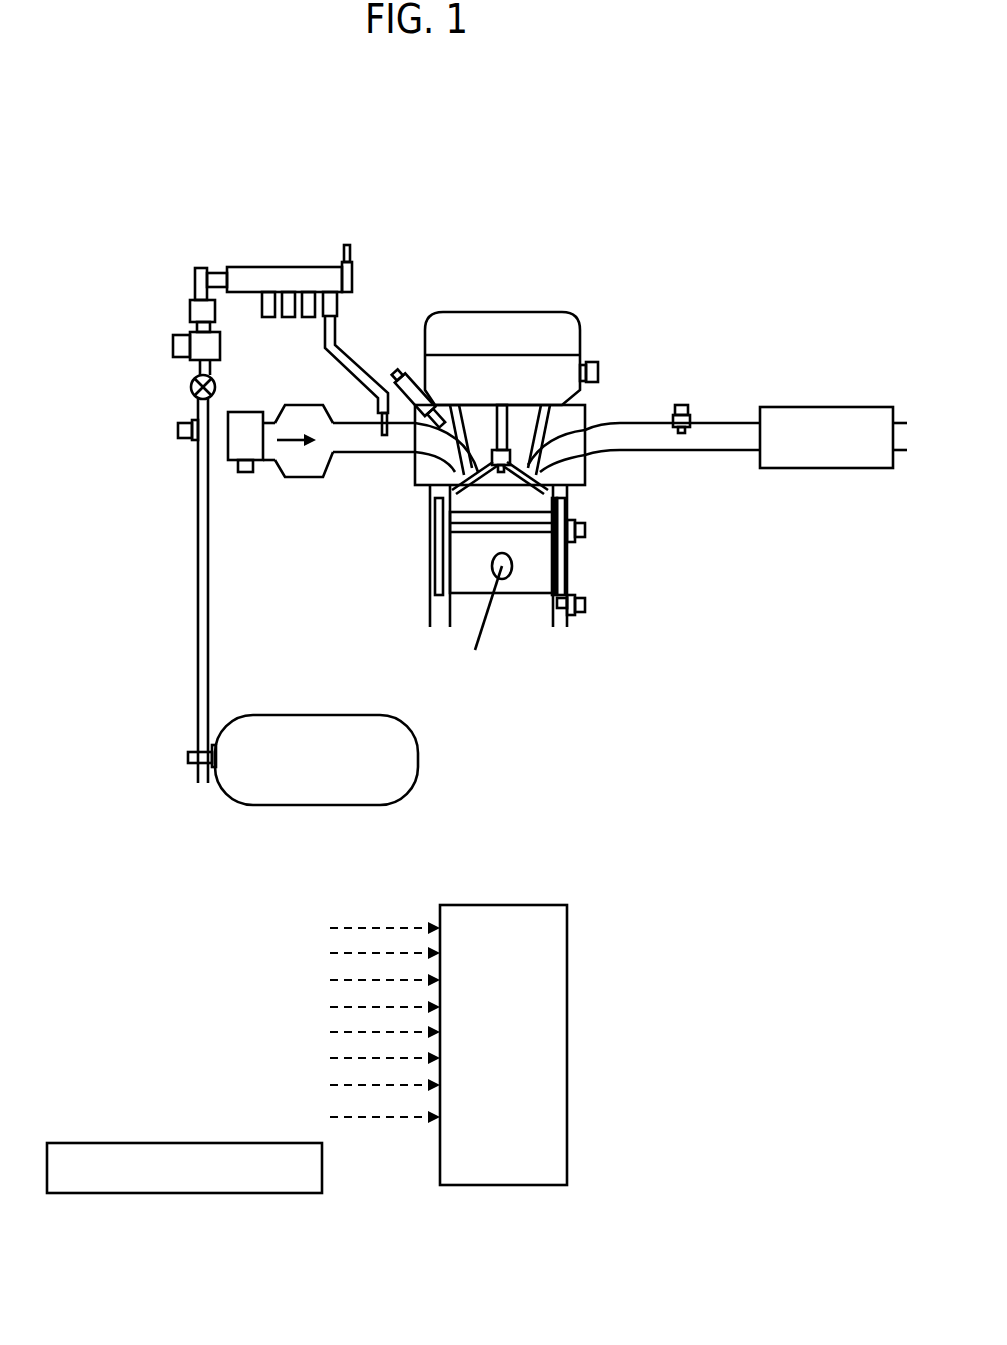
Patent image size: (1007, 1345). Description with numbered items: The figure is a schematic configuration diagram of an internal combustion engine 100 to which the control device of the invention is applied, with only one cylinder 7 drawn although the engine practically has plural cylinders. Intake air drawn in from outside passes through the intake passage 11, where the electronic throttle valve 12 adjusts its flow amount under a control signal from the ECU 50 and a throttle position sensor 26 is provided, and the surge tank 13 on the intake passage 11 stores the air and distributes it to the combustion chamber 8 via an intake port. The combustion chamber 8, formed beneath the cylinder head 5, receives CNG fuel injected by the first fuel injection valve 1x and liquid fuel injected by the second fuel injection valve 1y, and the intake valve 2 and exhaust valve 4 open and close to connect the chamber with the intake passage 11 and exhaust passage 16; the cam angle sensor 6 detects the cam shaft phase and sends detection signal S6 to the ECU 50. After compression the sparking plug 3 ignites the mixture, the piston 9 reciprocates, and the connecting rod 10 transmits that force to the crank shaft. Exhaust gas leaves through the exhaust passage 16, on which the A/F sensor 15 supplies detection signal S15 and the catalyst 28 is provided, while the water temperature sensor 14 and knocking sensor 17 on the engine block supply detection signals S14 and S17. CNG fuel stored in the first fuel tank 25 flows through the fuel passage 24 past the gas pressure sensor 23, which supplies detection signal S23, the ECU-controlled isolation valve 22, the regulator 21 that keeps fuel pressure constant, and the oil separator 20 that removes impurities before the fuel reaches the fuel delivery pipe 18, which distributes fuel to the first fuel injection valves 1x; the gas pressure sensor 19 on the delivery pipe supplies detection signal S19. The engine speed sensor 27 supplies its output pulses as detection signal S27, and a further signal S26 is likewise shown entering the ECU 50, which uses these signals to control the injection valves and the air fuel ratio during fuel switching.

The internal combustion engine 100 is at (478, 108).
The first fuel injection valve 1x is at (385, 366).
The second fuel injection valve 1y is at (419, 385).
The intake valve 2 is at (414, 485).
The sparking plug 3 is at (510, 420).
The exhaust valve 4 is at (602, 465).
The cylinder head 5 is at (630, 386).
The cam angle sensor 6 is at (590, 360).
The cylinder 7 is at (450, 600).
The combustion chamber 8 is at (495, 503).
The piston 9 is at (460, 578).
The connecting rod 10 is at (475, 650).
The intake passage 11 is at (363, 443).
The electronic throttle valve 12 is at (252, 410).
The surge tank 13 is at (303, 460).
The water temperature sensor 14 is at (586, 535).
The A/F sensor 15 is at (690, 410).
The exhaust passage 16 is at (720, 423).
The knocking sensor 17 is at (586, 610).
The fuel delivery pipe 18 is at (303, 278).
The gas pressure sensor 19 is at (356, 275).
The oil separator 20 is at (191, 300).
The regulator 21 is at (191, 332).
The isolation valve 22 is at (192, 387).
The gas pressure sensor 23 is at (176, 438).
The fuel passage 24 is at (198, 512).
The first fuel tank 25 is at (317, 715).
The throttle position sensor 26 is at (255, 468).
The engine speed sensor 27 is at (193, 1193).
The catalyst 28 is at (808, 407).
The ECU 50 is at (505, 905).
The detection signal S6 is at (598, 372).
The detection signal S14 is at (587, 530).
The detection signal S15 is at (681, 403).
The detection signal S17 is at (587, 605).
The detection signal S19 is at (348, 245).
The detection signal S23 is at (176, 430).
The air flow signal S26 is at (246, 474).
The detection signal S27 is at (430, 1167).